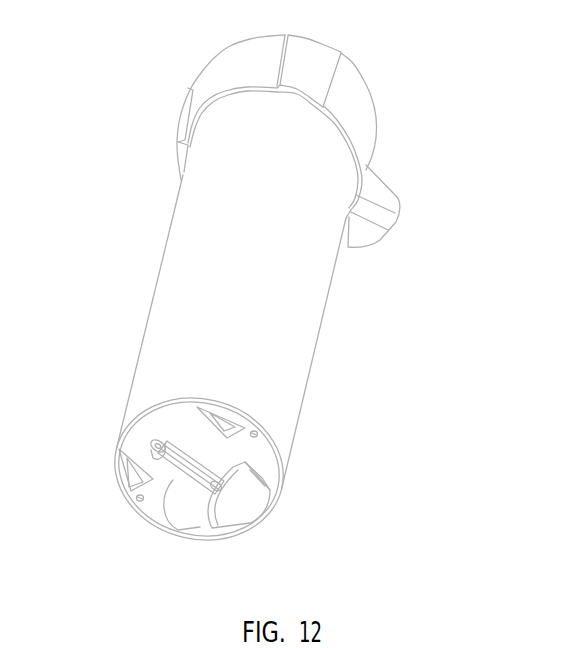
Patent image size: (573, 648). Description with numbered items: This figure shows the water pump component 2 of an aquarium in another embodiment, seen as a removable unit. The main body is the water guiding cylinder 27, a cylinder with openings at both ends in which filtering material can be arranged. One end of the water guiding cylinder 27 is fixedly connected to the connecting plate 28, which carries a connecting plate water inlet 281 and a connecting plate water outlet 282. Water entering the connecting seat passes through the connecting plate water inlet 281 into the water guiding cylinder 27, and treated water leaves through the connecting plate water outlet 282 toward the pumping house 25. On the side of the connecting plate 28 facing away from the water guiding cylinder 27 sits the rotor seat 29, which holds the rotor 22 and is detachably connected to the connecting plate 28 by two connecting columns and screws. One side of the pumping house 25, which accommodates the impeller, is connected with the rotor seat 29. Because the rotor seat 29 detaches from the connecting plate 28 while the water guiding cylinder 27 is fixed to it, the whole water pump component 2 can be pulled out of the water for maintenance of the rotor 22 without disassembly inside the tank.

The water pump component 2 is at (147, 182).
The water guiding cylinder 27 is at (182, 278).
The connecting plate 28 is at (128, 438).
The connecting plate water inlet 281 is at (236, 420).
The connecting plate water outlet 282 is at (260, 487).
The rotor 22 is at (170, 497).
The pumping house 25 is at (232, 522).
The rotor seat 29 is at (193, 487).